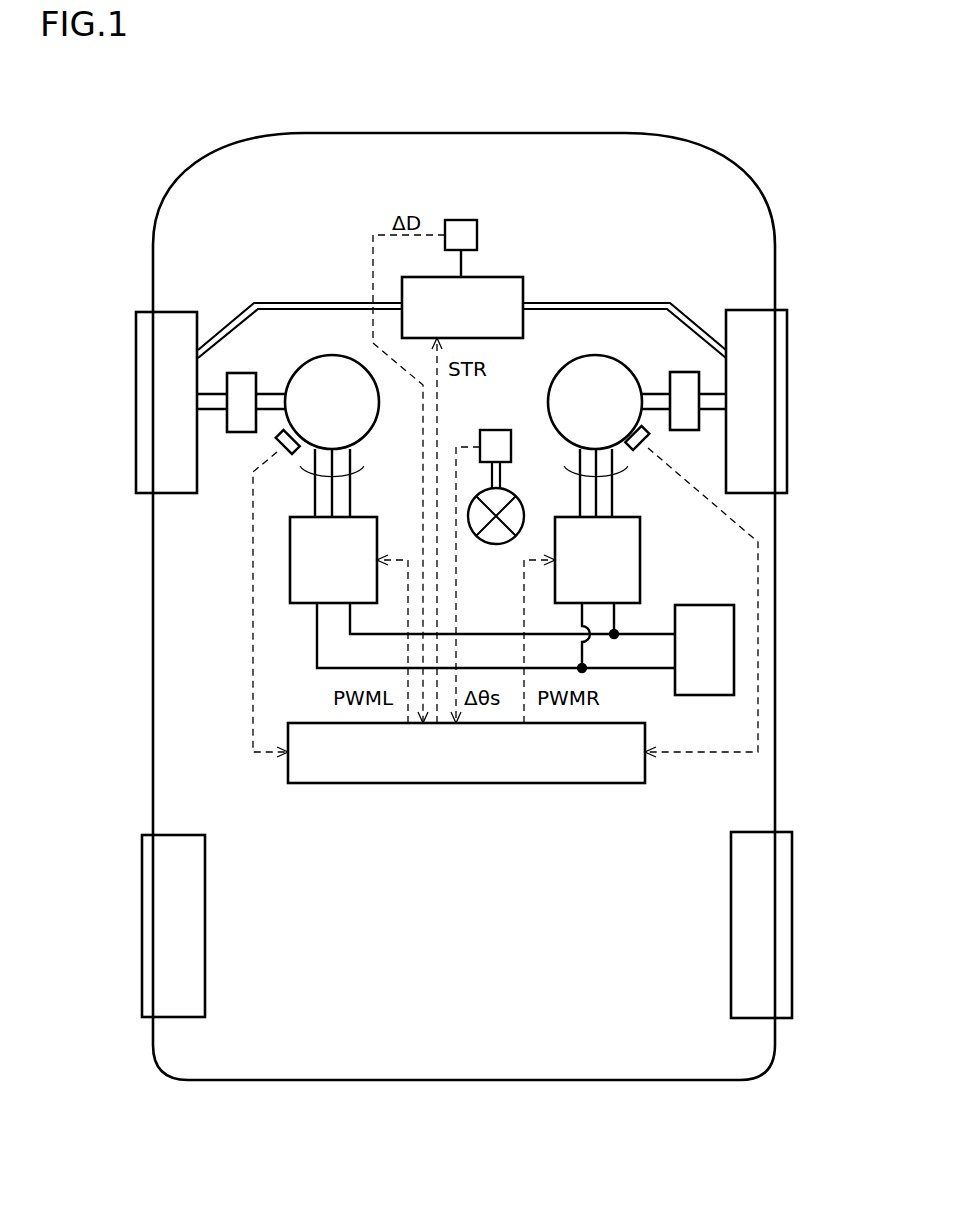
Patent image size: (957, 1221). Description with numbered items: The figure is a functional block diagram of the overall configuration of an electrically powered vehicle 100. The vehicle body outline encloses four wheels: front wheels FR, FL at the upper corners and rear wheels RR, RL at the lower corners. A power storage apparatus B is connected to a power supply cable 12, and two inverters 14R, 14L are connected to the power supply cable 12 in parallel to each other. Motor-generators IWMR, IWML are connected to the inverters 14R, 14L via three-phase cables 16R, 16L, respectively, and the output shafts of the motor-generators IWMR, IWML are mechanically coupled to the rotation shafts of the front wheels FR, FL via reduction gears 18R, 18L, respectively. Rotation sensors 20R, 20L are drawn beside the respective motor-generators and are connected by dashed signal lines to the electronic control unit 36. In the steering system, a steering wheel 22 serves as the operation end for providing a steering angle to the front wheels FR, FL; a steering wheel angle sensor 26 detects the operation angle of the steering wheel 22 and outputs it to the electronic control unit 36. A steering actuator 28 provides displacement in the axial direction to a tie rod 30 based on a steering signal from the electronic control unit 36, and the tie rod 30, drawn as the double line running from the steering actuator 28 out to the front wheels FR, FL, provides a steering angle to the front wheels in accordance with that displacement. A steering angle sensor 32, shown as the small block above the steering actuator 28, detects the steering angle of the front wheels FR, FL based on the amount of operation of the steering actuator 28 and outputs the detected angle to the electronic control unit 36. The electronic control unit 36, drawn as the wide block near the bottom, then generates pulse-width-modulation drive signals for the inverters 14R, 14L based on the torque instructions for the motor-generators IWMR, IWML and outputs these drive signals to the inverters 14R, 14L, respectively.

The electrically powered vehicle 100 is at (184, 96).
The front left wheel FL is at (136, 402).
The front right wheel FR is at (787, 400).
The rear left wheel RL is at (142, 928).
The rear right wheel RR is at (792, 928).
The tie rod 30 is at (270, 303).
The steering angle sensor 32 is at (462, 220).
The steering actuator 28 is at (505, 277).
The motor-generator IWML is at (334, 356).
The motor-generator IWMR is at (594, 356).
The reduction gear 18L is at (227, 386).
The reduction gear 18R is at (699, 382).
The rotation sensor 20L is at (279, 436).
The rotation sensor 20R is at (648, 433).
The three-phase cable 16L is at (362, 470).
The three-phase cable 16R is at (626, 466).
The inverter 14L is at (290, 560).
The inverter 14R is at (640, 560).
The steering wheel angle sensor 26 is at (497, 430).
The steering wheel 22 is at (496, 544).
The power supply cable 12 is at (650, 620).
The power storage apparatus B is at (734, 650).
The electronic control unit 36 is at (577, 783).